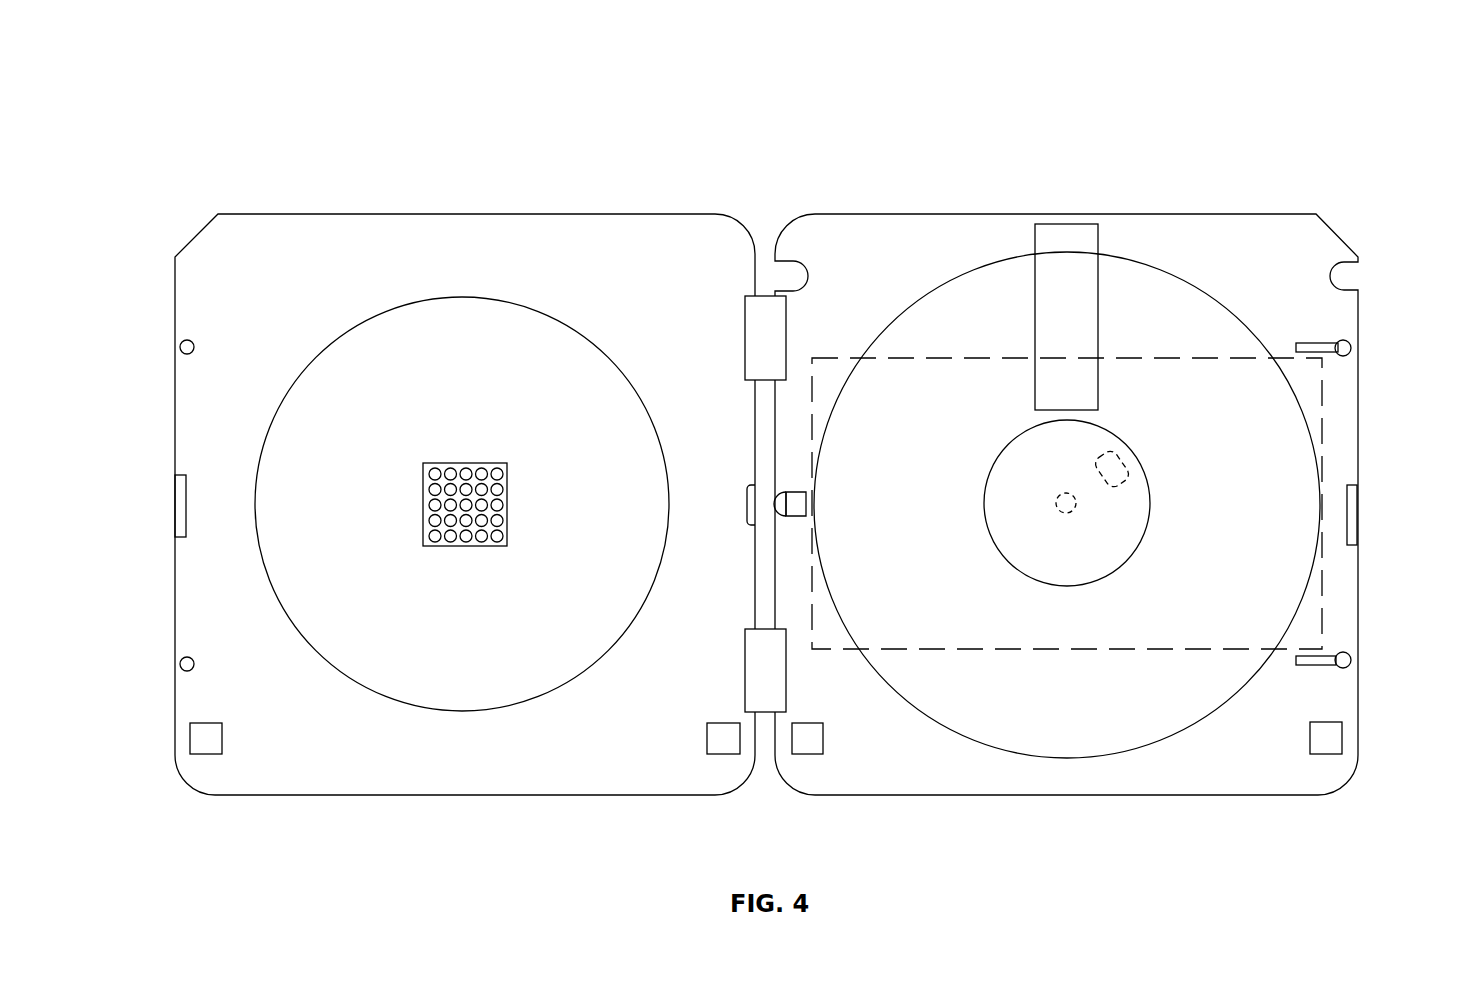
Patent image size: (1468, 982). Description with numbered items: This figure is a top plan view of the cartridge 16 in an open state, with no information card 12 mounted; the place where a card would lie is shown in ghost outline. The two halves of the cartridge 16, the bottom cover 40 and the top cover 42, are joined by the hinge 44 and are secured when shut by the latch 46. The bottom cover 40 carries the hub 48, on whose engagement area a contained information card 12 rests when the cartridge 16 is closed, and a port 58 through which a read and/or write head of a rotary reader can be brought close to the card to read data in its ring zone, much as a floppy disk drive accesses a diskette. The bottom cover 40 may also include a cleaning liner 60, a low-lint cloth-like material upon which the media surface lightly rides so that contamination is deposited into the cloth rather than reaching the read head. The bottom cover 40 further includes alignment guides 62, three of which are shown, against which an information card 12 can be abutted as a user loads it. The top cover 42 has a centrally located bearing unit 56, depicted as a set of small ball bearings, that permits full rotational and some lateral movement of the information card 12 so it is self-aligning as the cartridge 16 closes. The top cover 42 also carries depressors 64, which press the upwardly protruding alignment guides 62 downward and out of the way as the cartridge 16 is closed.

The cartridge 16 is at (1275, 160).
The bottom cover 40 is at (873, 268).
The top cover 42 is at (686, 268).
The hinge 44 is at (760, 338).
The latch 46 is at (181, 507).
The hub 48 is at (1082, 557).
The bearing unit 56 is at (465, 463).
The port 58 is at (1066, 255).
The cleaning liner 60 is at (1215, 295).
The alignment guides 62 is at (806, 504).
The depressors 64 is at (191, 343).
The information card 12 is at (1065, 650).